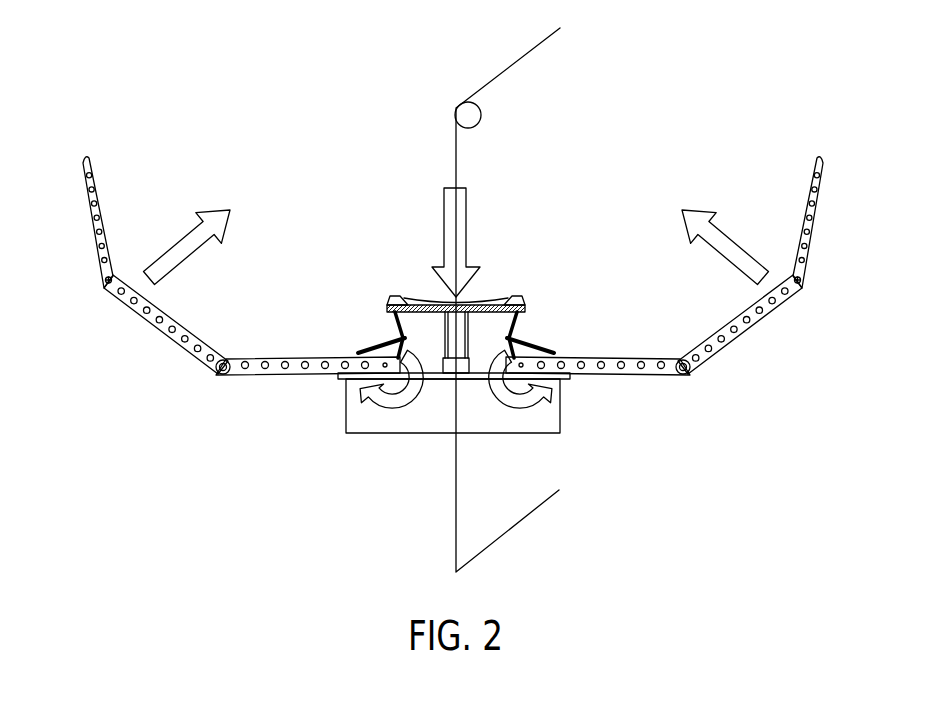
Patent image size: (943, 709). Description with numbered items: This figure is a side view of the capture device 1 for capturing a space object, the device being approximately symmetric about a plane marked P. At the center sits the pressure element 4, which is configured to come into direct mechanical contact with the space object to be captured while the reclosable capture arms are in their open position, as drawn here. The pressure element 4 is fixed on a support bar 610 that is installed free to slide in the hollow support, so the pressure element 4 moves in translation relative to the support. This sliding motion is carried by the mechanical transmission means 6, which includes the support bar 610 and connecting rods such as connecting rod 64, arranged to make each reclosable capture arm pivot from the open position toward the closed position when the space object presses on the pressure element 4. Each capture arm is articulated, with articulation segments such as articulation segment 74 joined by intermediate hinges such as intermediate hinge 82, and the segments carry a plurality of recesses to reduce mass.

The capture device 1 is at (505, 205).
The pressure element 4 is at (488, 297).
The mechanical transmission means 6 is at (372, 350).
The support bar 610 is at (452, 332).
The connecting rod 64 is at (528, 340).
The articulation segment 74 is at (746, 335).
The intermediate hinge 82 is at (680, 377).